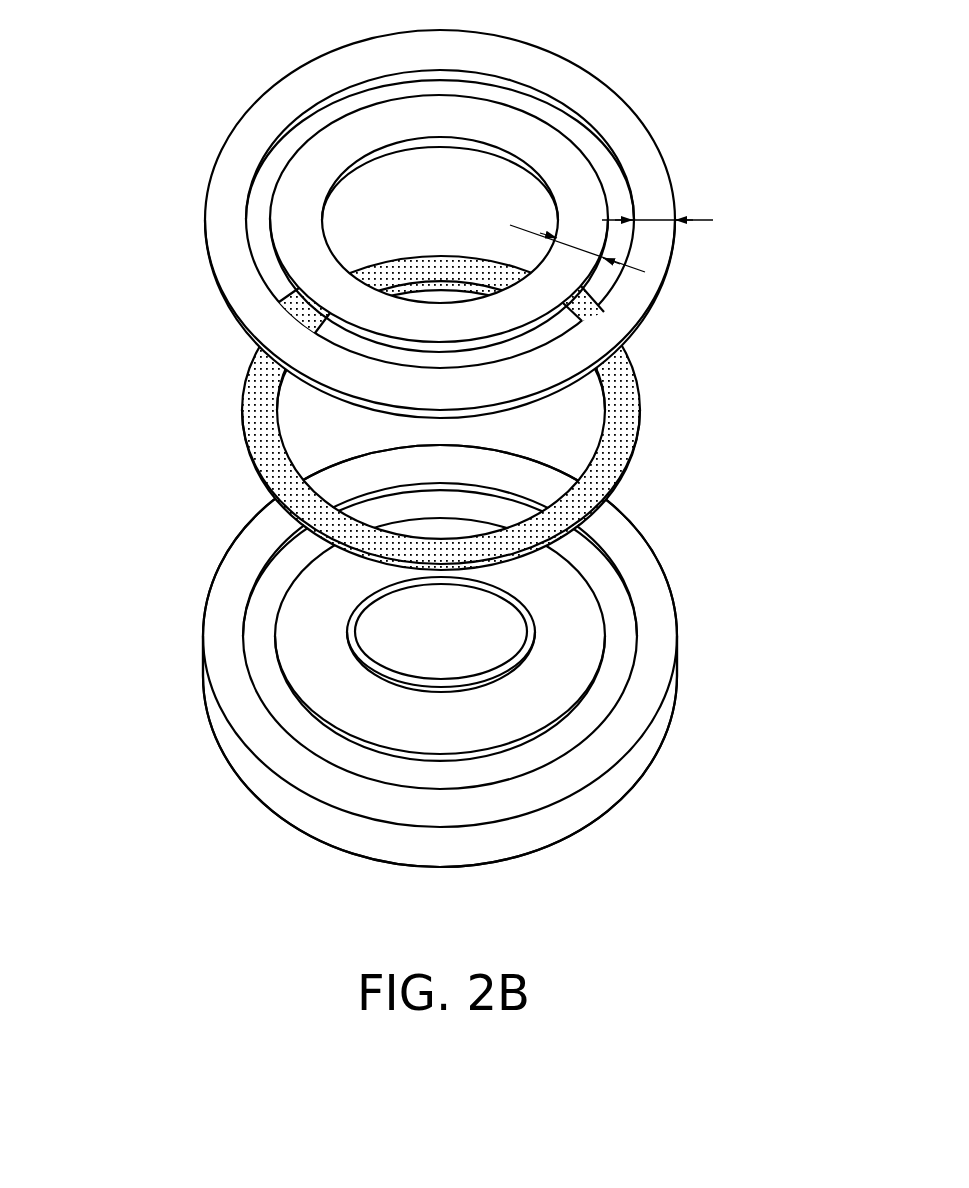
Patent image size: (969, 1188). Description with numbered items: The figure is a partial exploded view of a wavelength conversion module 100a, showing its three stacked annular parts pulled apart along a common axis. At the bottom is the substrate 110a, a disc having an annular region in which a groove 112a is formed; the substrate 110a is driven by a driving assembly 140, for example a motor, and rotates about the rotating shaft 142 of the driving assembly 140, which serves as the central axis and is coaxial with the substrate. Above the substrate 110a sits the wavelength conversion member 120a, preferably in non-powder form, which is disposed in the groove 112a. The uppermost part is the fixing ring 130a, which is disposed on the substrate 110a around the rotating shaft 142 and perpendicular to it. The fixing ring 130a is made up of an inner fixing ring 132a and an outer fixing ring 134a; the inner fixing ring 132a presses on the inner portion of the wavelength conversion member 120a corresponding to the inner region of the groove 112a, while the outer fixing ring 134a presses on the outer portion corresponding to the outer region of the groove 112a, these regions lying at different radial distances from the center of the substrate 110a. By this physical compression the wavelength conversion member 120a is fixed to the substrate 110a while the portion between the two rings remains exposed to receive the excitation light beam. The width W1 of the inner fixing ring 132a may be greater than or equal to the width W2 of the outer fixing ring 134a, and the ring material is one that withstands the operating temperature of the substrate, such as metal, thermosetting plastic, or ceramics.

The wavelength conversion module 100a is at (421, 461).
The substrate 110a is at (407, 656).
The groove 112a is at (262, 583).
The wavelength conversion member 120a is at (623, 404).
The fixing ring 130a is at (506, 224).
The inner fixing ring 132a is at (565, 165).
The outer fixing ring 134a is at (615, 113).
The driving assembly 140 is at (285, 705).
The rotating shaft 142 is at (408, 652).
The width of the inner fixing ring W1 is at (576, 245).
The width of the outer fixing ring W2 is at (655, 220).